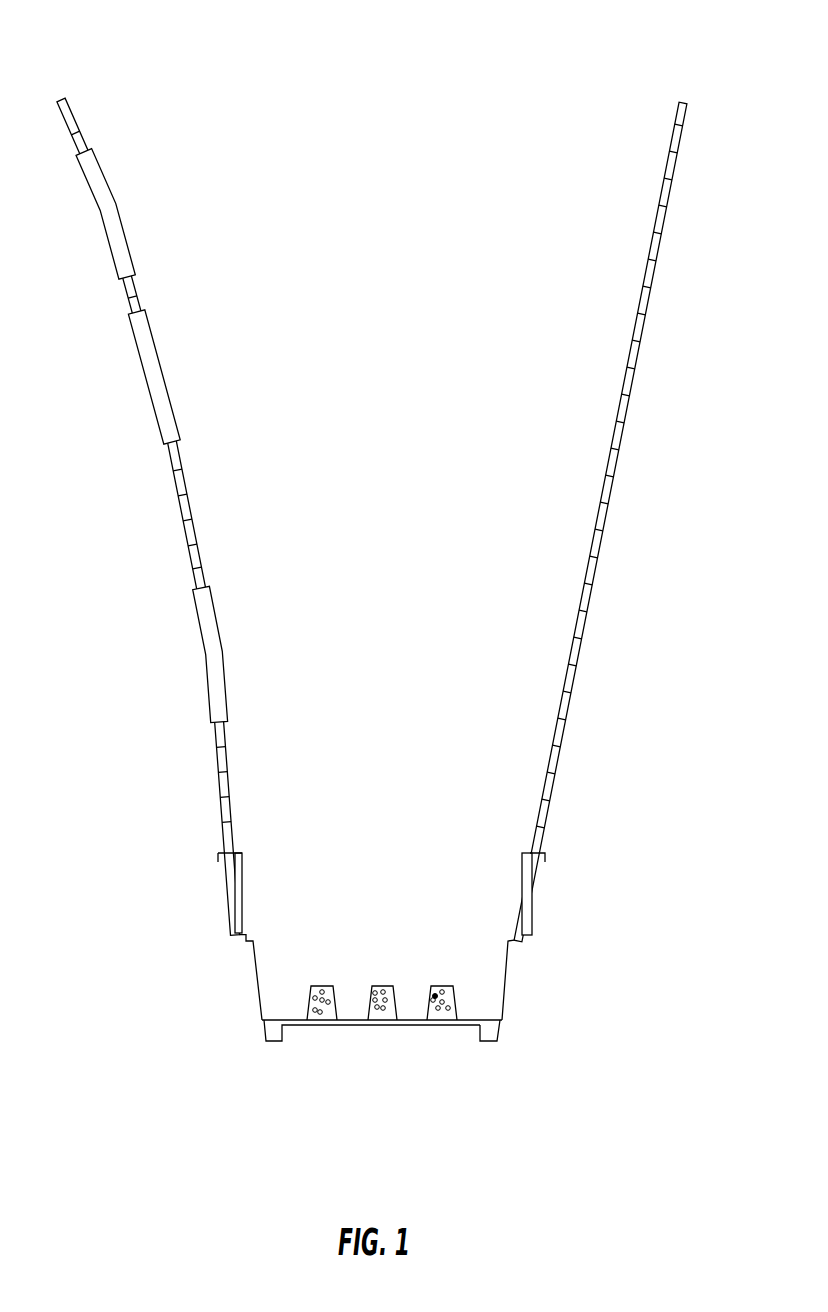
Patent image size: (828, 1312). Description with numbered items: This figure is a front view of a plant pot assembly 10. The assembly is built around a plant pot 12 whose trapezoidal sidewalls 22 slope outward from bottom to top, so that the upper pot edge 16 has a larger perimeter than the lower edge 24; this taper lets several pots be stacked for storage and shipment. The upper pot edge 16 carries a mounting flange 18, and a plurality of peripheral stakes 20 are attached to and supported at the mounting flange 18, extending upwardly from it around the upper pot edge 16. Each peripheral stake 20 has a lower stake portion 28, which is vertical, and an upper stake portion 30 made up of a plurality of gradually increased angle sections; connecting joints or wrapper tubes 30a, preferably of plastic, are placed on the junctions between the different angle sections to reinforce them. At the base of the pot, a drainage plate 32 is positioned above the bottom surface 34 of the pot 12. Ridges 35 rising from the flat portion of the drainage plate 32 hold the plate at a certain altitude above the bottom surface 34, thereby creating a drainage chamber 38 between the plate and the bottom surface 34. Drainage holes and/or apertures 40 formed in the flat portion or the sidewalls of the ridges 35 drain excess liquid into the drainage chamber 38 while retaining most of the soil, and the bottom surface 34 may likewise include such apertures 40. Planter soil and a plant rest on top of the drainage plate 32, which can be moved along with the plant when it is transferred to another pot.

The plant pot assembly 10 is at (597, 117).
The plant pot 12 is at (505, 1002).
The upper pot edge 16 is at (237, 853).
The mounting flange 18 is at (220, 853).
The peripheral stakes 20 is at (608, 497).
The sidewalls 22 is at (257, 973).
The lower edge 24 is at (500, 1038).
The lower stake portion 28 is at (235, 892).
The upper stake portion 30 is at (585, 597).
The wrapper tubes 30a is at (115, 206).
The drainage plate 32 is at (481, 1019).
The bottom surface 34 is at (468, 1027).
The ridges 35 is at (436, 997).
The drainage chamber 38 is at (447, 1017).
The drainage holes and/or apertures 40 is at (388, 1015).